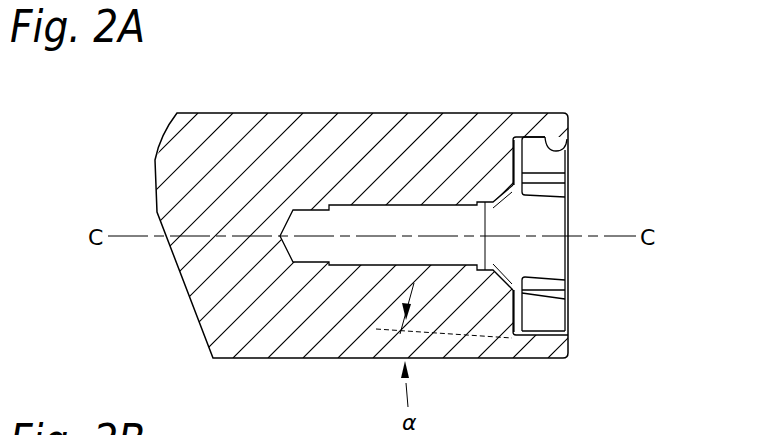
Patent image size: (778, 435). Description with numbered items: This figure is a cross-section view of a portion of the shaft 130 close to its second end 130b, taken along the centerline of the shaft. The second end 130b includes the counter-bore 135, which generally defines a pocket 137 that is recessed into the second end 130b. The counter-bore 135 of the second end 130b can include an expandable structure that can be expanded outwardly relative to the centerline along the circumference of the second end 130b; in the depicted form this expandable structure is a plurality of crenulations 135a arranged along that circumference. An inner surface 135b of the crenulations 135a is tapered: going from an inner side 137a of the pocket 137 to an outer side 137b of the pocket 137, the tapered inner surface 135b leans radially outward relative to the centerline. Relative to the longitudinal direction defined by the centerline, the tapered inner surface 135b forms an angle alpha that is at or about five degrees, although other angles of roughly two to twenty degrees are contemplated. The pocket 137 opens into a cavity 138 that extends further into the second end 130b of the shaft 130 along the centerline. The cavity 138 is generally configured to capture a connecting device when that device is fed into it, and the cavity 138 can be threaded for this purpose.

The shaft 130 is at (347, 112).
The second end 130b is at (487, 125).
The cavity 138 is at (367, 222).
The counter-bore 135 is at (572, 249).
The crenulations 135a is at (550, 113).
The inner surface 135b is at (570, 142).
The pocket 137 is at (556, 163).
The inner side 137a is at (516, 336).
The outer side 137b is at (568, 335).